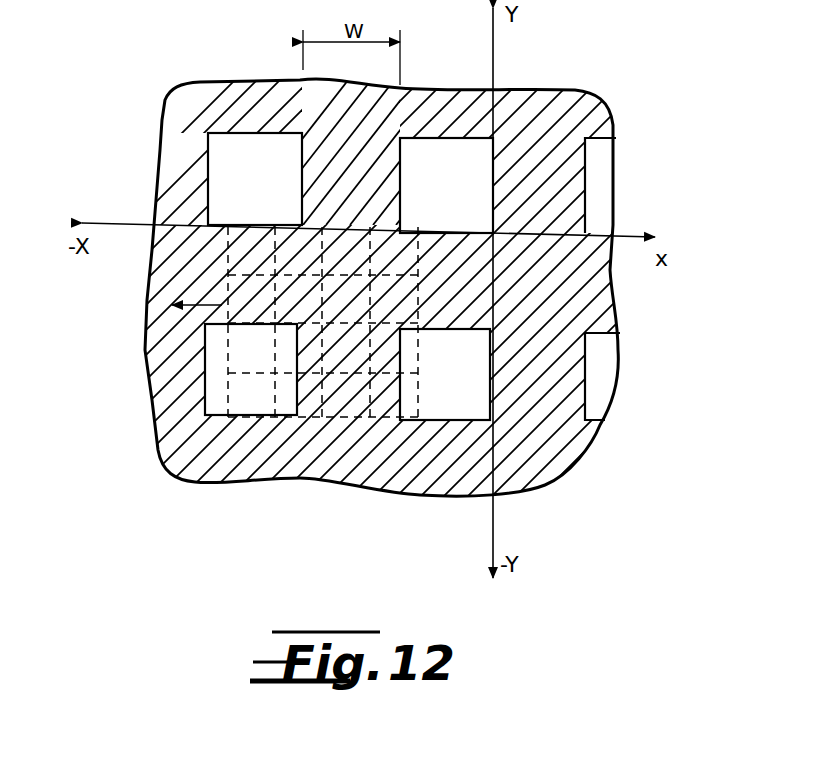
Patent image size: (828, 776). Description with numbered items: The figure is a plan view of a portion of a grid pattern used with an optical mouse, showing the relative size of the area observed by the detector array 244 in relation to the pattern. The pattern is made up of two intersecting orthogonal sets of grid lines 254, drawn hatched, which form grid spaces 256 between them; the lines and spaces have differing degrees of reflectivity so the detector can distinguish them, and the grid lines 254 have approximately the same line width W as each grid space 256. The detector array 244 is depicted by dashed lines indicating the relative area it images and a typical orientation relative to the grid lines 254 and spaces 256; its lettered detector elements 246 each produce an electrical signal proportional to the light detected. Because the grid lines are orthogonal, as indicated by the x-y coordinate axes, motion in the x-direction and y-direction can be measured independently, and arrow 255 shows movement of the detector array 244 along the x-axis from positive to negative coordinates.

The detector array 244 is at (300, 432).
The detector elements 246 is at (238, 352).
The grid lines 254 is at (536, 107).
The arrow 255 is at (198, 302).
The grid spaces 256 is at (410, 150).